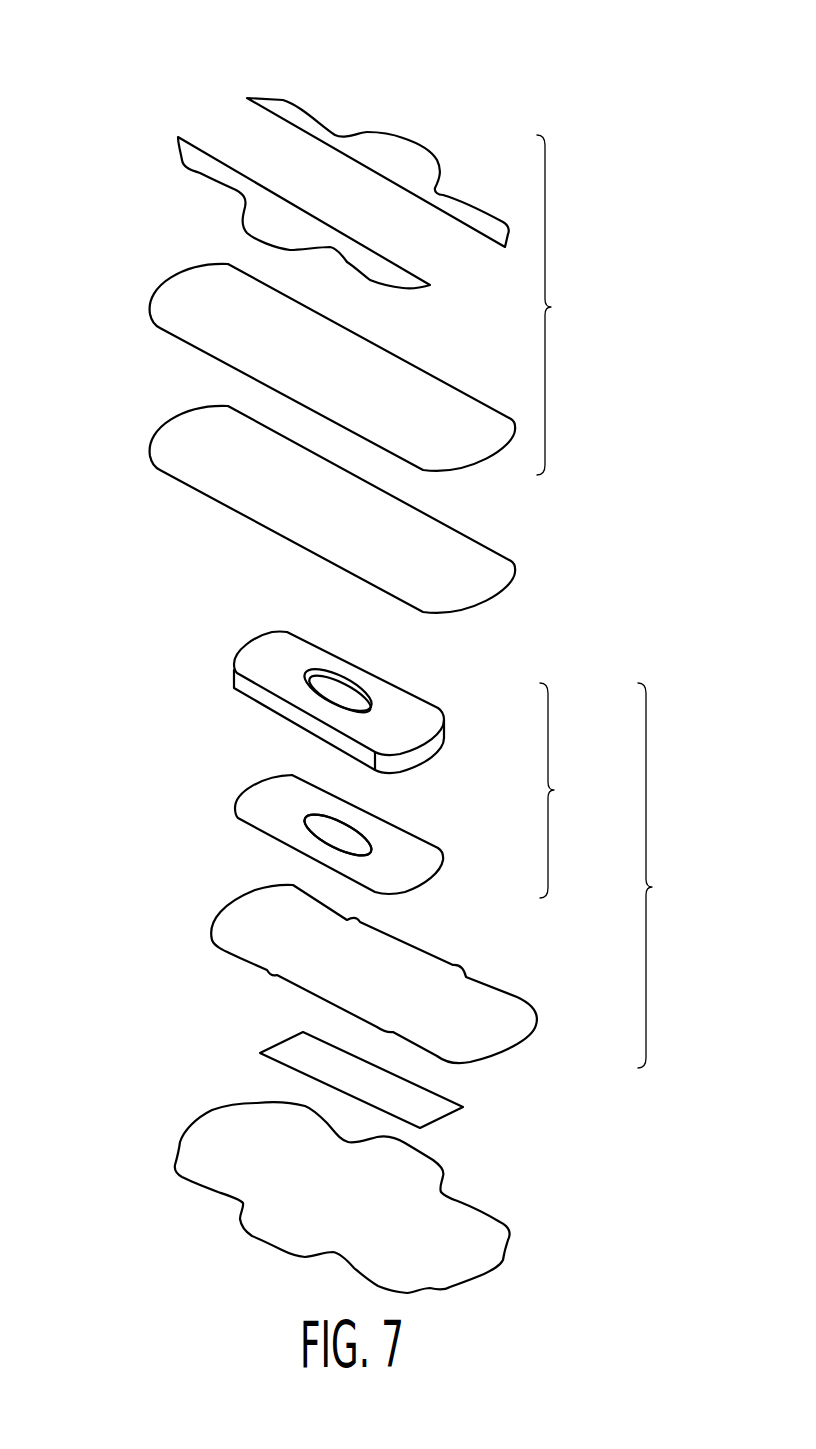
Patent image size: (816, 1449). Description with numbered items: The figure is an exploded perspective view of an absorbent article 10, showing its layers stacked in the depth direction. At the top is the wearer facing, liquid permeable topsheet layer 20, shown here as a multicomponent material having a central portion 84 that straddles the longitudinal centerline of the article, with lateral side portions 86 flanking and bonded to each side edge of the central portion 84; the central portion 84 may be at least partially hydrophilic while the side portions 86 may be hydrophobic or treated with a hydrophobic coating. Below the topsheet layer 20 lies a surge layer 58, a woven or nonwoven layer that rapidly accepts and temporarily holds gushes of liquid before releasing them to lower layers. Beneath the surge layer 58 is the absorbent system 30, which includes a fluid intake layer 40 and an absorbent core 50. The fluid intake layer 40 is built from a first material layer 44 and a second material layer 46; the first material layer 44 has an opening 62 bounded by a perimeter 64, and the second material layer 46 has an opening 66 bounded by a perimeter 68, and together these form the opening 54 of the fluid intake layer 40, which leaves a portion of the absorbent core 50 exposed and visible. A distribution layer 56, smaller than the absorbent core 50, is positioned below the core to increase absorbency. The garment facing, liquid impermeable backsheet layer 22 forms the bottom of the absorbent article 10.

The absorbent article 10 is at (120, 67).
The topsheet layer 20 is at (561, 305).
The backsheet layer 22 is at (220, 1172).
The absorbent system 30 is at (662, 875).
The fluid intake layer 40 is at (563, 790).
The first material layer 44 is at (257, 655).
The second material layer 46 is at (255, 807).
The absorbent core 50 is at (230, 917).
The opening 54 is at (347, 669).
The distribution layer 56 is at (285, 1045).
The surge layer 58 is at (167, 437).
The opening of the first material layer 62 is at (331, 690).
The perimeter 64 is at (367, 693).
The opening of the second material layer 66 is at (337, 833).
The perimeter 68 is at (370, 840).
The central portion 84 is at (167, 292).
The side portions 86 is at (293, 110).